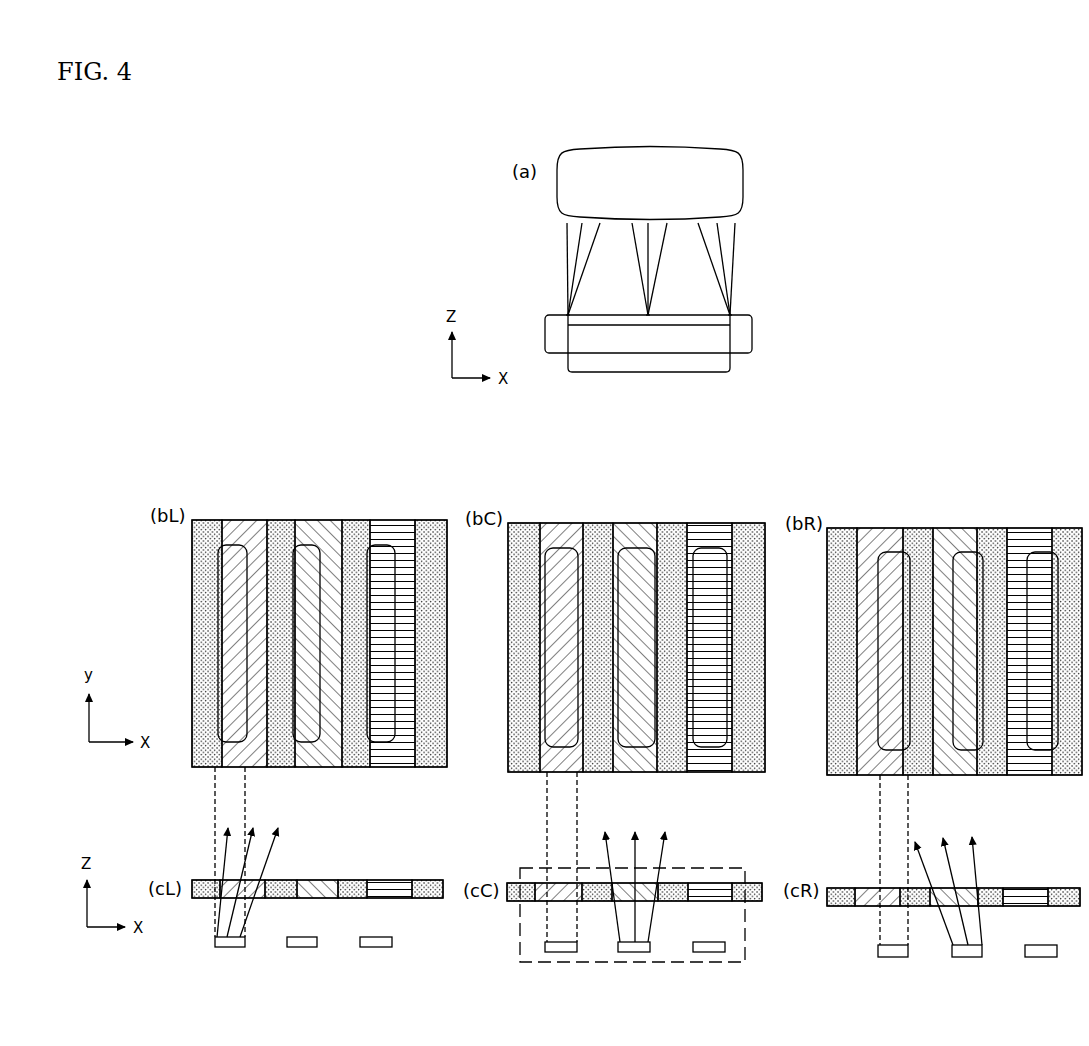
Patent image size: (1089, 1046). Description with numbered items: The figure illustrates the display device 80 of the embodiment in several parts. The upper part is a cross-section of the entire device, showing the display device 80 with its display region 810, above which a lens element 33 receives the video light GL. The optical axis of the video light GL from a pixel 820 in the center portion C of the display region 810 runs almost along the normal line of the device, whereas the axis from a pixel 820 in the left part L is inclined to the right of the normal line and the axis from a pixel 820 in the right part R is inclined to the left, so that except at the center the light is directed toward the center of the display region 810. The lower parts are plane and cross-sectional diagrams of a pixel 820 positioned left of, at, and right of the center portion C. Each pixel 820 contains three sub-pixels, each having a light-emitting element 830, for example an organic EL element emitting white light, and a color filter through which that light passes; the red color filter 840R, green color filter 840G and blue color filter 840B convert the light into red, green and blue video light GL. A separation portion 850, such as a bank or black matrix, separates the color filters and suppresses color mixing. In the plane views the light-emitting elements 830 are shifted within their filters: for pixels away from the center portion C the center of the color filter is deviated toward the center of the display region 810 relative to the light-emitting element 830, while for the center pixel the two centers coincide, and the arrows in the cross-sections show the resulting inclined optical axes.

The projection lens 33 is at (741, 177).
The video light GL is at (733, 236).
The left part of the display region L is at (583, 301).
The center portion of the display region C is at (657, 306).
The right part of the display region R is at (737, 304).
The display device 80 is at (786, 315).
The display region 810 is at (652, 372).
The pixel 820 is at (742, 870).
The light-emitting element 830 is at (715, 523).
The red color filter 840R is at (247, 520).
The green color filter 840G is at (320, 520).
The blue color filter 840B is at (392, 520).
The separation portion 850 is at (430, 520).